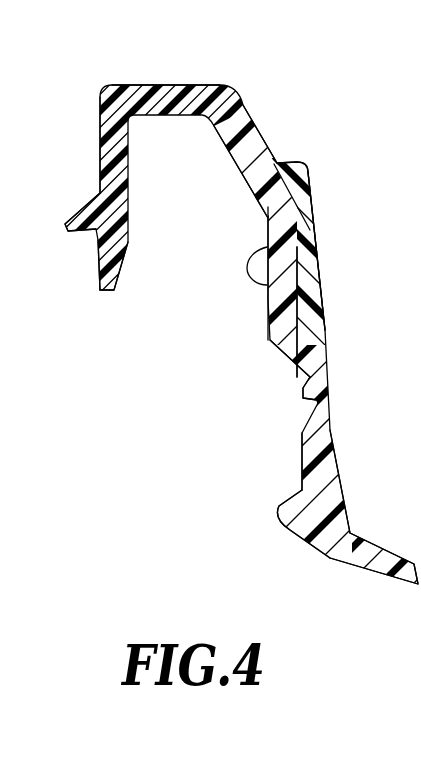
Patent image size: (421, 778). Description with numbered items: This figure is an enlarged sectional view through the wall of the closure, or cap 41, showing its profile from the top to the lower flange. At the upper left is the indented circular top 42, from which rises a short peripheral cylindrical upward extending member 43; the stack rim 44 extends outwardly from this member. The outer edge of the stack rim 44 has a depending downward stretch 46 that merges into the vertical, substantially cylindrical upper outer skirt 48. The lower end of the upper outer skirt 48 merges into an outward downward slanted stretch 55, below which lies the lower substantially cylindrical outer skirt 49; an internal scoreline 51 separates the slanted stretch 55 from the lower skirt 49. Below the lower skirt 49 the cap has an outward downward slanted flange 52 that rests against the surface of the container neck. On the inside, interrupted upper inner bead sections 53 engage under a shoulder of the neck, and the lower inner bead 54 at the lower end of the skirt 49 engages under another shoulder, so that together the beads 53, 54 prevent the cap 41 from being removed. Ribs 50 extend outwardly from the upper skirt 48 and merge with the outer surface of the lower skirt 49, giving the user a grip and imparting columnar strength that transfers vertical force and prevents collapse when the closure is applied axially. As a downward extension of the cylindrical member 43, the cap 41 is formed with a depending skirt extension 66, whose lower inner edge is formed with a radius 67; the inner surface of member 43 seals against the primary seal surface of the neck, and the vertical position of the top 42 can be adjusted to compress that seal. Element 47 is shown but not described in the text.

The cap 41 is at (258, 83).
The indented circular top 42 is at (72, 203).
The peripheral cylindrical upward extending member 43 is at (103, 142).
The stack rim 44 is at (172, 92).
The depending downward stretch 46 is at (252, 157).
The second leg 47 is at (306, 200).
The upper outer skirt 48 is at (290, 283).
The lower outer skirt 49 is at (332, 472).
The ribs 50 is at (305, 250).
The internal scoreline 51 is at (330, 403).
The outward downward slanted flange 52 is at (393, 543).
The upper inner bead sections 53 is at (265, 277).
The lower inner bead 54 is at (297, 507).
The outward downward slanted stretch 55 is at (323, 340).
The depending skirt extension 66 is at (100, 257).
The radius 67 is at (127, 263).